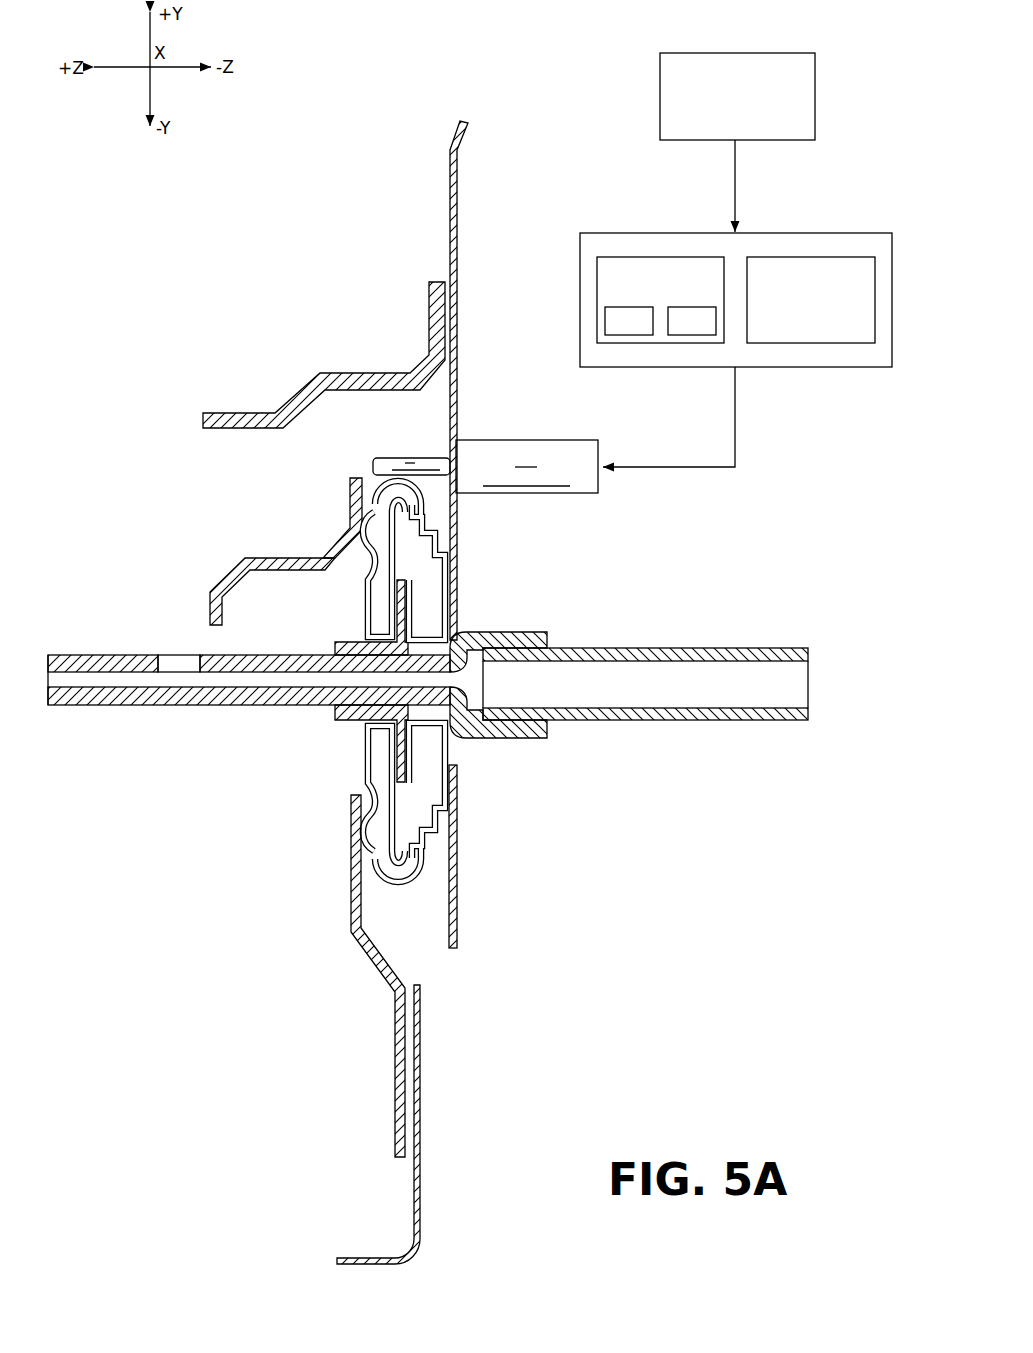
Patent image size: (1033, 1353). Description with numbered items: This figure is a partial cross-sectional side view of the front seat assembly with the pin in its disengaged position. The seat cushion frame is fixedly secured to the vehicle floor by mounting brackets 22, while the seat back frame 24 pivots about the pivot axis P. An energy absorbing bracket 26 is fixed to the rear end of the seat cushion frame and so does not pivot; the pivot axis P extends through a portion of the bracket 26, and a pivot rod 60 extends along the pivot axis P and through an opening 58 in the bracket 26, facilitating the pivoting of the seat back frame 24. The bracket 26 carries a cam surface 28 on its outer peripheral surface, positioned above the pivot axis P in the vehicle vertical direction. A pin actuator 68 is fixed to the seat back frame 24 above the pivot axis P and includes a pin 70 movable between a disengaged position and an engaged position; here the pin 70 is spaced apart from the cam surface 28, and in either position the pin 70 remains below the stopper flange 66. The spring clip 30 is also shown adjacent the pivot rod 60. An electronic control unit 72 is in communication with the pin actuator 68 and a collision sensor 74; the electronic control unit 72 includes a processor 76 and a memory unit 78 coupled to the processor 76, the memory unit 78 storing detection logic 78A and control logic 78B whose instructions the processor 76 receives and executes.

The mounting bracket 22 is at (425, 1120).
The seat back frame 24 is at (417, 200).
The energy absorbing bracket 26 is at (271, 552).
The cam surface 28 is at (356, 478).
The spring clip 30 is at (420, 884).
The opening 58 is at (349, 779).
The pivot rod 60 is at (123, 710).
The stopper flange 66 is at (304, 365).
The pin actuator 68 is at (560, 497).
The pin 70 is at (420, 457).
The electronic control unit 72 is at (893, 290).
The collision sensor 74 is at (817, 95).
The processor 76 is at (878, 320).
The memory unit 78 is at (665, 257).
The detection logic 78A is at (629, 321).
The control logic 78B is at (692, 321).
The pivot axis P is at (44, 672).